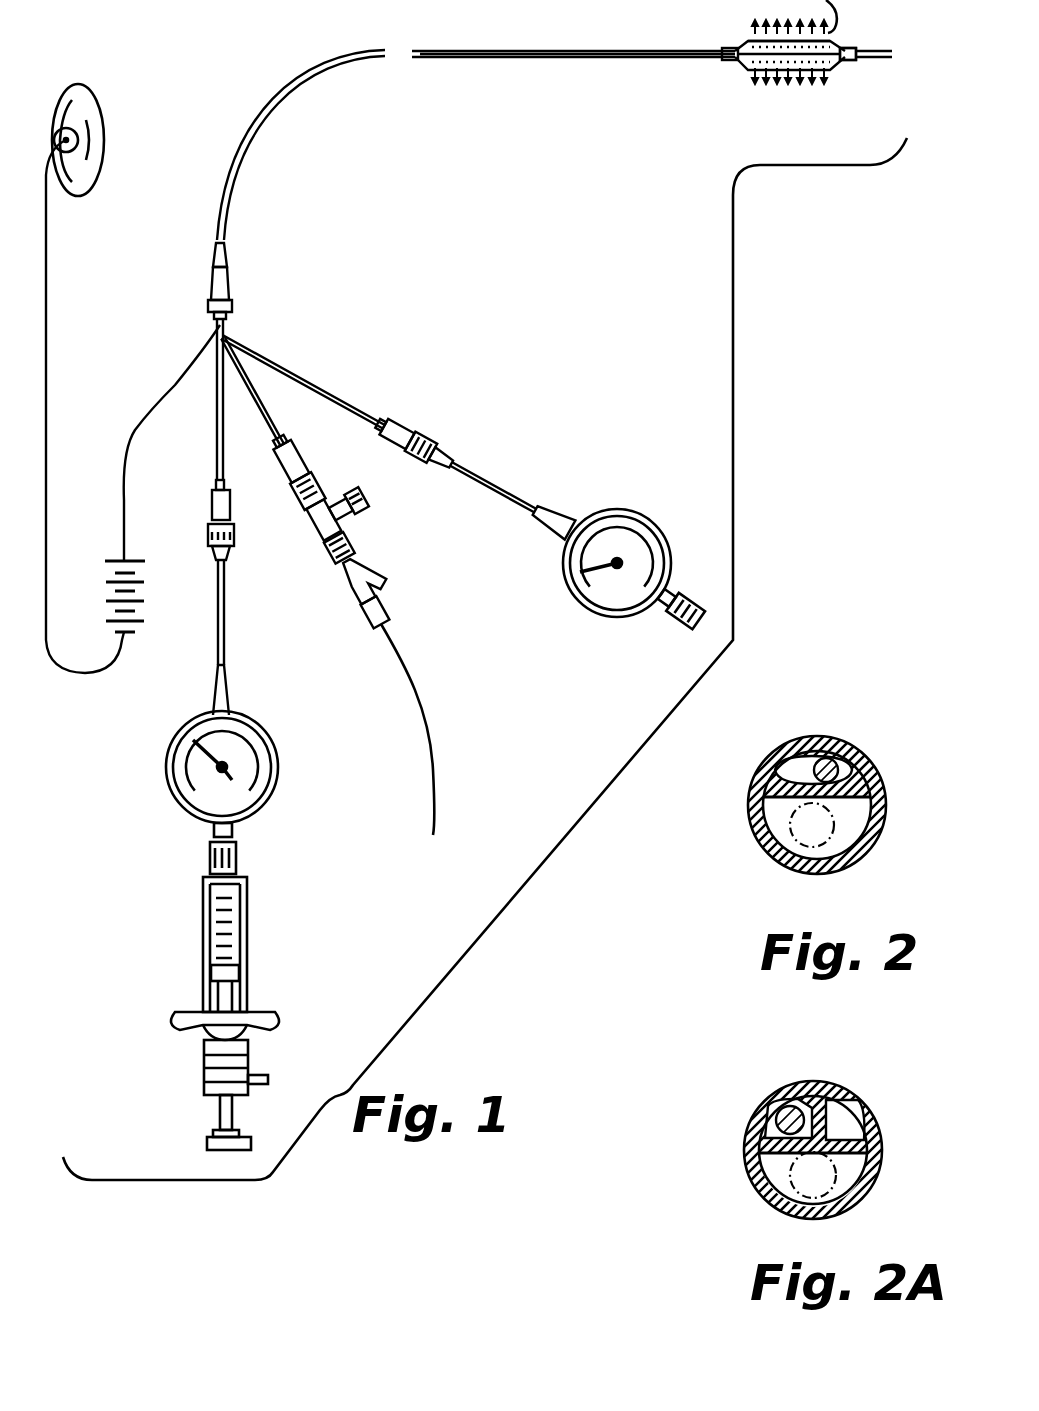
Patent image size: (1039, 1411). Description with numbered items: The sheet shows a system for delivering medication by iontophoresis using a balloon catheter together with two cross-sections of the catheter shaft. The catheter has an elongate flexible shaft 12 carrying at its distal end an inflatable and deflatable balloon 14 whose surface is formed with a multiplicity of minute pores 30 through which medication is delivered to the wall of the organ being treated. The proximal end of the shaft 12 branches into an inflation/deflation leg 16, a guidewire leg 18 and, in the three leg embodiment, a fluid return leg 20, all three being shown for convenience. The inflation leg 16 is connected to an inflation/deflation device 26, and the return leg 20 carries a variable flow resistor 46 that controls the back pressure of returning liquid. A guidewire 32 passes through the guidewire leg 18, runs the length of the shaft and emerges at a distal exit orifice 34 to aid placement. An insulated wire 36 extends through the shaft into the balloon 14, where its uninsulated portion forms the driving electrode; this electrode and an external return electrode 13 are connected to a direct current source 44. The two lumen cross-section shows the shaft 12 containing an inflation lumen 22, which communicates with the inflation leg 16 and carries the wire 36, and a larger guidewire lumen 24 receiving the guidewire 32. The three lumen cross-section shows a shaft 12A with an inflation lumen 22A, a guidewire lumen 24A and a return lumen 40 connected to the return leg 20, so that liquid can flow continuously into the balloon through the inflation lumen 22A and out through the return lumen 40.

In FIG. 1, the catheter shaft 12 is at (482, 160).
In FIG. 2, the catheter shaft 12 is at (805, 810).
In FIG. 1, the external return electrode 13 is at (98, 78).
In FIG. 1, the balloon 14 is at (745, 44).
In FIG. 1, the inflation/deflation leg 16 is at (216, 398).
In FIG. 1, the guidewire leg 18 is at (278, 422).
In FIG. 1, the fluid return leg 20 is at (348, 398).
In FIG. 2, the inflation lumen 22 is at (790, 752).
In FIG. 2, the guidewire lumen 24 is at (768, 845).
In FIG. 1, the inflation/deflation device 26 is at (254, 938).
In FIG. 1, the pores 30 is at (755, 70).
In FIG. 1, the guidewire 32 is at (432, 708).
In FIG. 2, the guidewire 32 is at (834, 850).
In FIG. 2A, the guidewire 32 is at (820, 1195).
In FIG. 1, the distal exit orifice 34 is at (877, 54).
In FIG. 1, the insulated wire 36 is at (148, 410).
In FIG. 2, the insulated wire 36 is at (842, 768).
In FIG. 2A, the return lumen 40 is at (848, 1120).
In FIG. 1, the direct current source 44 is at (150, 595).
In FIG. 1, the variable flow resistor 46 is at (622, 510).
In FIG. 2A, the catheter shaft 12A is at (800, 1150).
In FIG. 2A, the inflation lumen 22A is at (804, 1100).
In FIG. 2A, the guidewire lumen 24A is at (752, 1172).